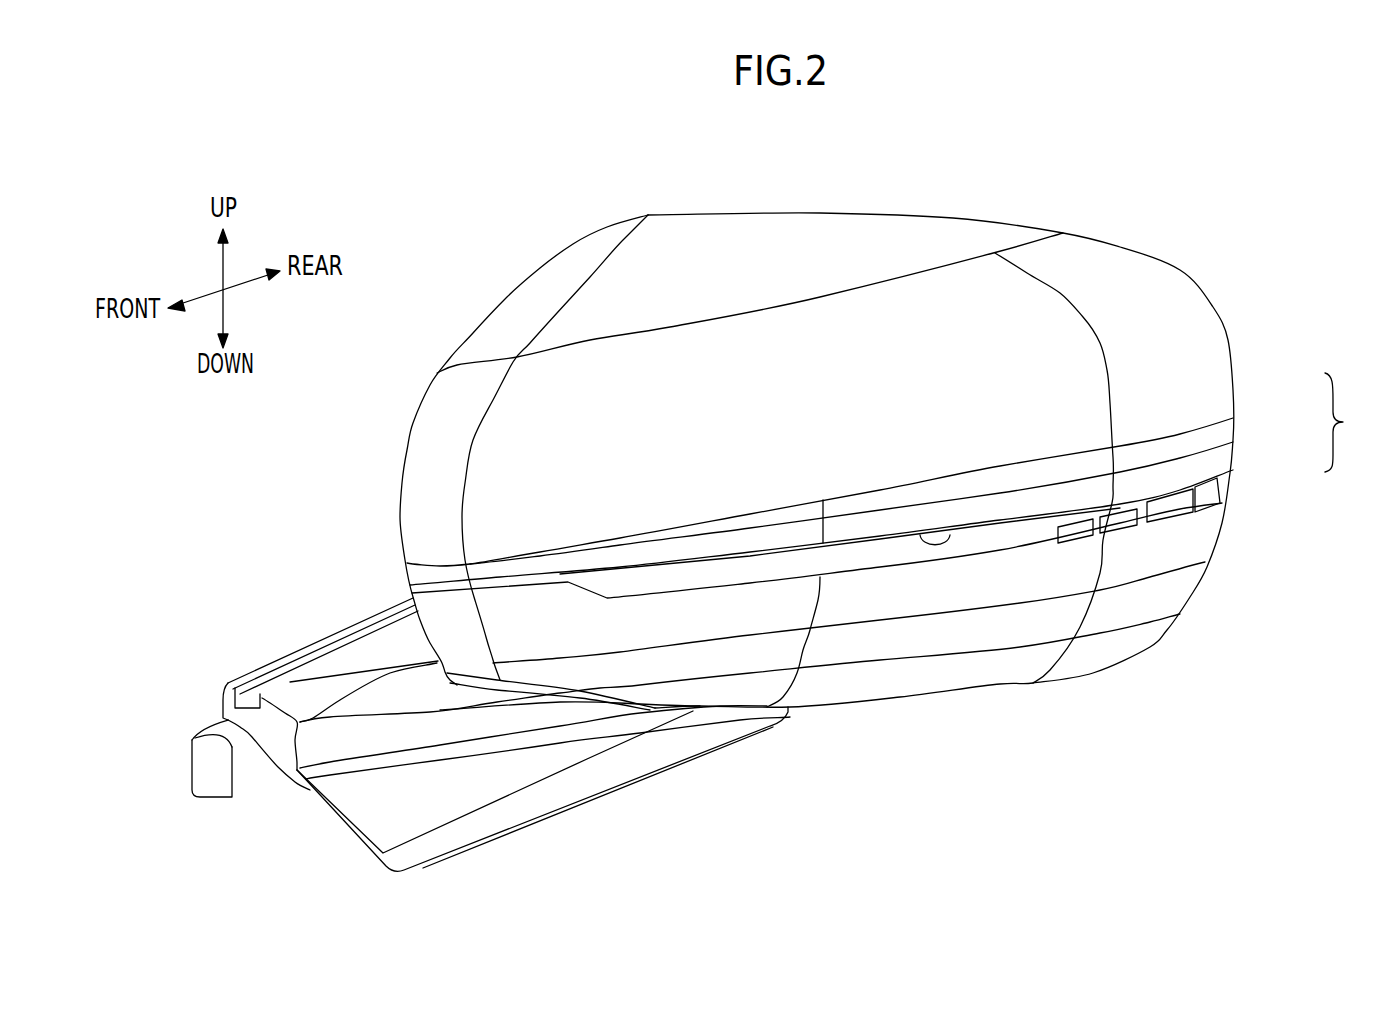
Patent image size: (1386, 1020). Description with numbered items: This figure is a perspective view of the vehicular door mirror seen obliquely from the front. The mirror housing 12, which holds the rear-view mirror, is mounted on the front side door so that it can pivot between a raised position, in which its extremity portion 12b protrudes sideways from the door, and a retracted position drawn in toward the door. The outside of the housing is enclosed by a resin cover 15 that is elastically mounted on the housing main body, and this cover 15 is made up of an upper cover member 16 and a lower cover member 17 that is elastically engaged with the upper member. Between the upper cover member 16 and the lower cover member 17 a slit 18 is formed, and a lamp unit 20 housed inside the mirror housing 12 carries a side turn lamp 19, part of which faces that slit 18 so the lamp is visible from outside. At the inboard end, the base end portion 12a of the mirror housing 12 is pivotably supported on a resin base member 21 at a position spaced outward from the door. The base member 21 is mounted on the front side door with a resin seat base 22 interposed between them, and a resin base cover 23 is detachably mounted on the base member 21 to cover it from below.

The mirror housing 12 is at (1183, 264).
The base end portion 12a is at (593, 667).
The extremity portion 12b is at (1168, 602).
The cover 15 is at (895, 479).
The upper cover member 16 is at (1213, 383).
The lower cover member 17 is at (1200, 541).
The slit 18 is at (948, 530).
The side turn lamp 19 is at (1028, 537).
The lamp unit 20 is at (1004, 567).
The base member 21 is at (402, 693).
The seat base 22 is at (262, 672).
The base cover 23 is at (497, 813).